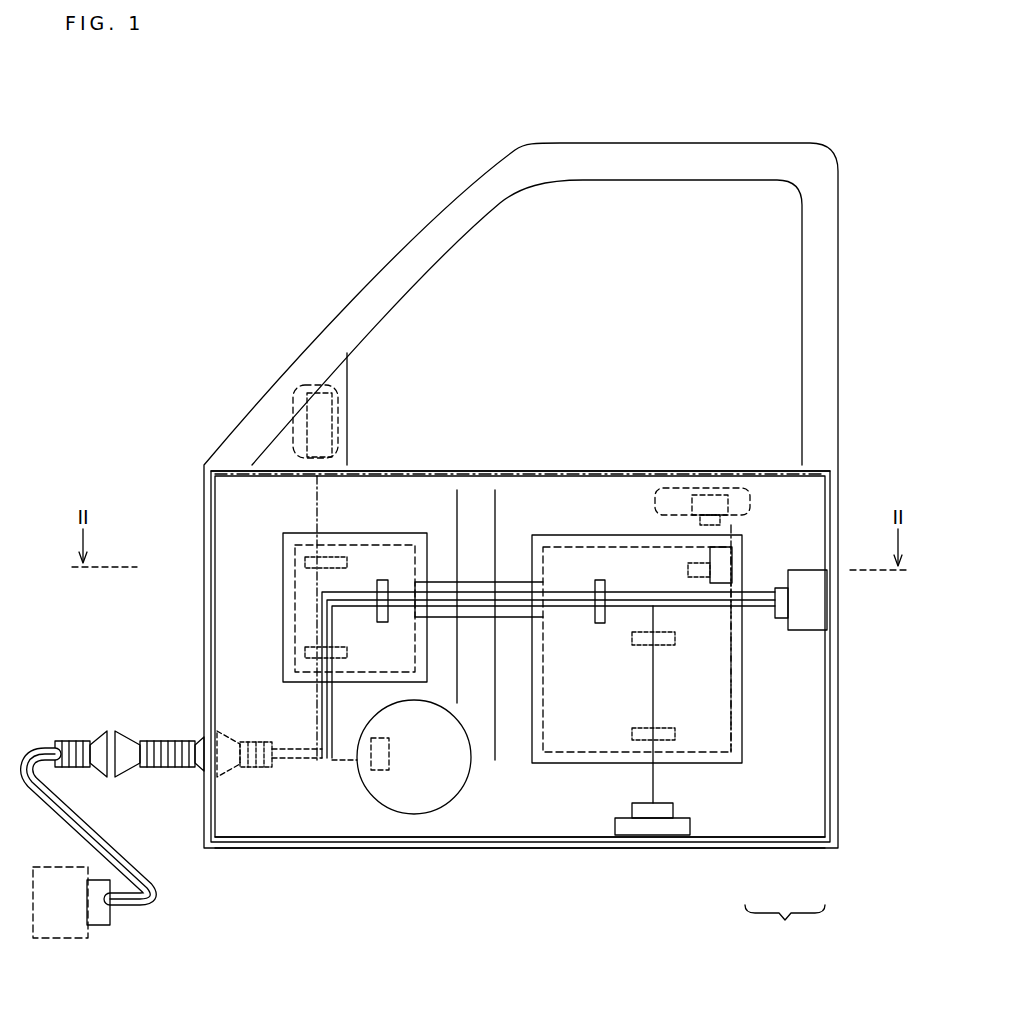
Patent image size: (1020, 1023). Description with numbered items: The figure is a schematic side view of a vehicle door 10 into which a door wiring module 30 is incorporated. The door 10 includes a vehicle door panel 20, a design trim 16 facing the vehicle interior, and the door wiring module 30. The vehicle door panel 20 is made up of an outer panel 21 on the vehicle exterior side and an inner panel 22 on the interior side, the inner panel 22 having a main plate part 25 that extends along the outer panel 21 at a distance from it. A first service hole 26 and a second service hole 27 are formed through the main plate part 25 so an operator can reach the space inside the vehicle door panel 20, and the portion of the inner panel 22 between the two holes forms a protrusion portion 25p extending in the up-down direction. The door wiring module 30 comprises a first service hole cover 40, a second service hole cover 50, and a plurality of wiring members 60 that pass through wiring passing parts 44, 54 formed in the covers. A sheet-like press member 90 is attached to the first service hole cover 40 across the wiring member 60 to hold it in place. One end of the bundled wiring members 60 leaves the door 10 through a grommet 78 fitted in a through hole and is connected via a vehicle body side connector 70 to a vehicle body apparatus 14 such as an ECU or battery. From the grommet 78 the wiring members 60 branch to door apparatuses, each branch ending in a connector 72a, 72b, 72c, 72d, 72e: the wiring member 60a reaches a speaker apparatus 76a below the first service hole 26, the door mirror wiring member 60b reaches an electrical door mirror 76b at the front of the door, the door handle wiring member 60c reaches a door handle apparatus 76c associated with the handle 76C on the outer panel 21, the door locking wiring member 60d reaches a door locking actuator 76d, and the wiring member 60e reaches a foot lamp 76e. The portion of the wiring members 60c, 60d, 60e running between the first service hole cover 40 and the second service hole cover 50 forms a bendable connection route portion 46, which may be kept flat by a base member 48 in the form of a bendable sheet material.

The door 10 is at (779, 140).
The vehicle body apparatus 14 is at (60, 940).
The design trim 16 is at (838, 772).
The vehicle door panel 20 is at (785, 926).
The outer panel 21 is at (767, 850).
The inner panel 22 is at (804, 850).
The main plate part 25 is at (533, 818).
The protrusion portion 25p is at (474, 510).
The first service hole 26 is at (572, 848).
The second service hole 27 is at (613, 547).
The door wiring module 30 is at (558, 522).
The first service hole cover 40 is at (297, 533).
The wiring passing part 44 is at (323, 556).
The connection route portion 46 is at (478, 582).
The base member 48 is at (478, 617).
The second service hole cover 50 is at (742, 700).
The wiring passing part 54 is at (732, 556).
The wiring member 60 is at (45, 742).
The wiring member 60a is at (342, 768).
The door mirror wiring member 60b is at (313, 585).
The door handle wiring member 60c is at (712, 578).
The door locking wiring member 60d is at (775, 615).
The wiring member 60e is at (655, 700).
The vehicle body side connector 70 is at (98, 928).
The connector 72a is at (380, 772).
The connector 72b is at (334, 466).
The connector 72c is at (722, 520).
The connector 72d is at (786, 618).
The connector 72e is at (673, 812).
The speaker apparatus 76a is at (455, 790).
The electrical door mirror 76b is at (340, 390).
The door handle apparatus 76c is at (722, 488).
The handle 76C is at (680, 475).
The door locking actuator 76d is at (815, 632).
The foot lamp 76e is at (690, 828).
The grommet 78 is at (166, 742).
The press member 90 is at (305, 562).